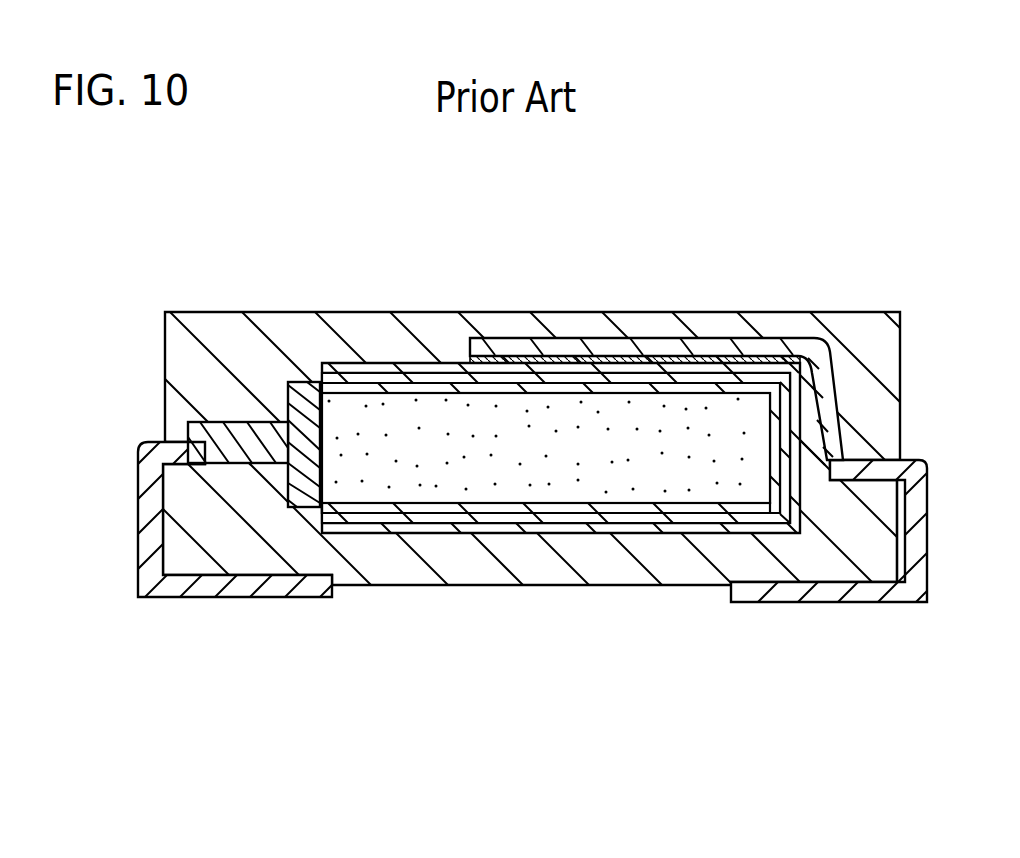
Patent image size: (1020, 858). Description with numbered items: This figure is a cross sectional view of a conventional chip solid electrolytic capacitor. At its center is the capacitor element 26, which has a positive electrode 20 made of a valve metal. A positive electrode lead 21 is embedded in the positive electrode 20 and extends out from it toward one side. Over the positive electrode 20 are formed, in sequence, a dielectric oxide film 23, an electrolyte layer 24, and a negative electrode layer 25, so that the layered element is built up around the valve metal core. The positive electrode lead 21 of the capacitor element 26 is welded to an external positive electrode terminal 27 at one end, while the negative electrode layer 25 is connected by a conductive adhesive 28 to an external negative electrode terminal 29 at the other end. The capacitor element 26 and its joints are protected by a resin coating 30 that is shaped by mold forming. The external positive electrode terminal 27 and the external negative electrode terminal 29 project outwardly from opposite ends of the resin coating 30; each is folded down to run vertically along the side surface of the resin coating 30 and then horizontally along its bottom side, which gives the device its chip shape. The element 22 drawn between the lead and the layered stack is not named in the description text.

The positive electrode 20 is at (555, 437).
The positive electrode lead 21 is at (225, 430).
The electrode block 22 is at (302, 392).
The dielectric oxide film 23 is at (675, 508).
The electrolyte layer 24 is at (542, 518).
The negative electrode layer 25 is at (382, 366).
The capacitor element 26 is at (432, 363).
The external positive electrode terminal 27 is at (208, 583).
The conductive adhesive 28 is at (672, 352).
The external negative electrode terminal 29 is at (820, 587).
The resin coating 30 is at (400, 567).